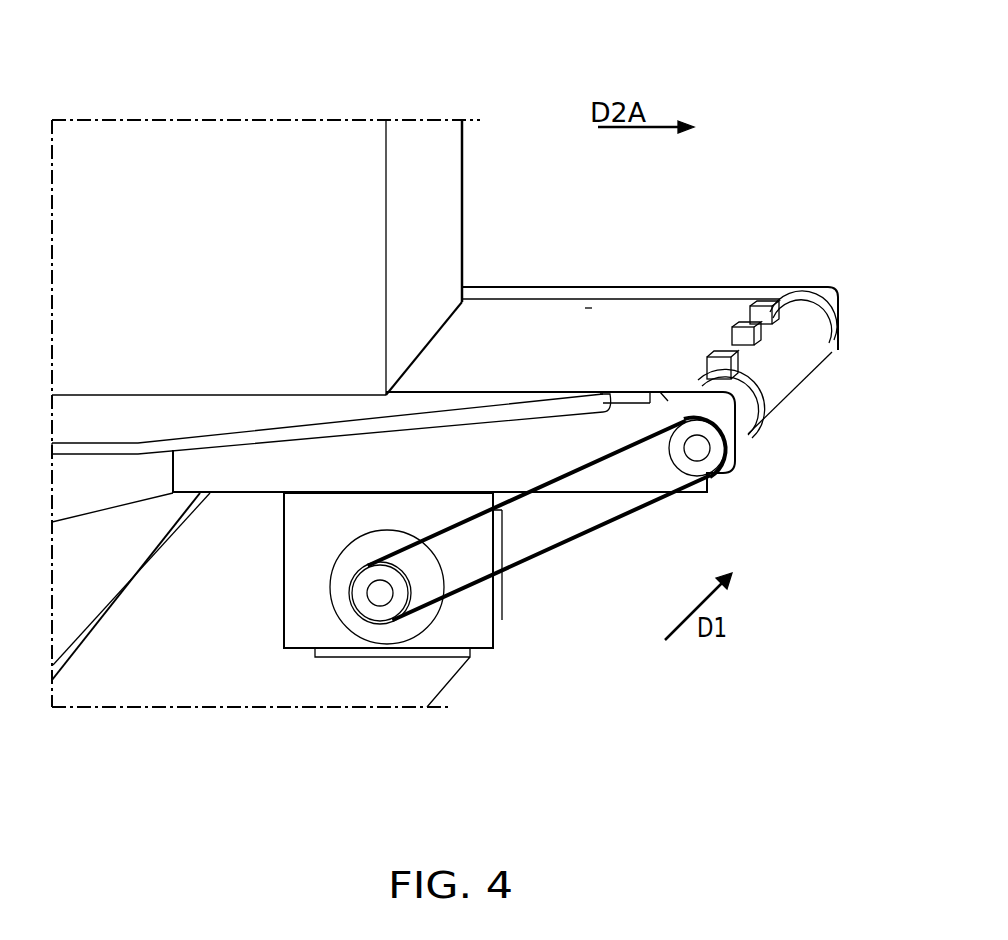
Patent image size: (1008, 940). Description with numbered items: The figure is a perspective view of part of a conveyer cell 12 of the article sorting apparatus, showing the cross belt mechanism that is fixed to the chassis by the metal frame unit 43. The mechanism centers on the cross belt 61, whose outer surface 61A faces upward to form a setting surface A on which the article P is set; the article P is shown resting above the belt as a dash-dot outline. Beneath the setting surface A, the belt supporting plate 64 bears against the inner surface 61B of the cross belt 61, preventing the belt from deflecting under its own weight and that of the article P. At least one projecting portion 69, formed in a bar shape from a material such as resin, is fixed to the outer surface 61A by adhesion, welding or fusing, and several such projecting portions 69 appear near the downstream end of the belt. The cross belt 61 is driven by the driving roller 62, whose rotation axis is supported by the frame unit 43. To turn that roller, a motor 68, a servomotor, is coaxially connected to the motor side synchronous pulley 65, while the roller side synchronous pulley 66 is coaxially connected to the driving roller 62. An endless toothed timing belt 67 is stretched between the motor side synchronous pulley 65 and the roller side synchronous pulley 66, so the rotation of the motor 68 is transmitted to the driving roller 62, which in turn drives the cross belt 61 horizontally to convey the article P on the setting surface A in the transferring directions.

The conveyer cell 12 is at (465, 402).
The frame unit 43 is at (250, 484).
The cross belt 61 is at (540, 314).
The outer surface 61A is at (593, 377).
The inner surface 61B is at (605, 410).
The driving roller 62 is at (700, 452).
The belt supporting plate 64 is at (328, 413).
The motor side synchronous pulley 65 is at (367, 612).
The roller side synchronous pulley 66 is at (717, 446).
The timing belt 67 is at (570, 540).
The motor 68 is at (387, 633).
The projecting portion 69 is at (755, 303).
The article P is at (258, 134).
The setting surface A is at (584, 310).